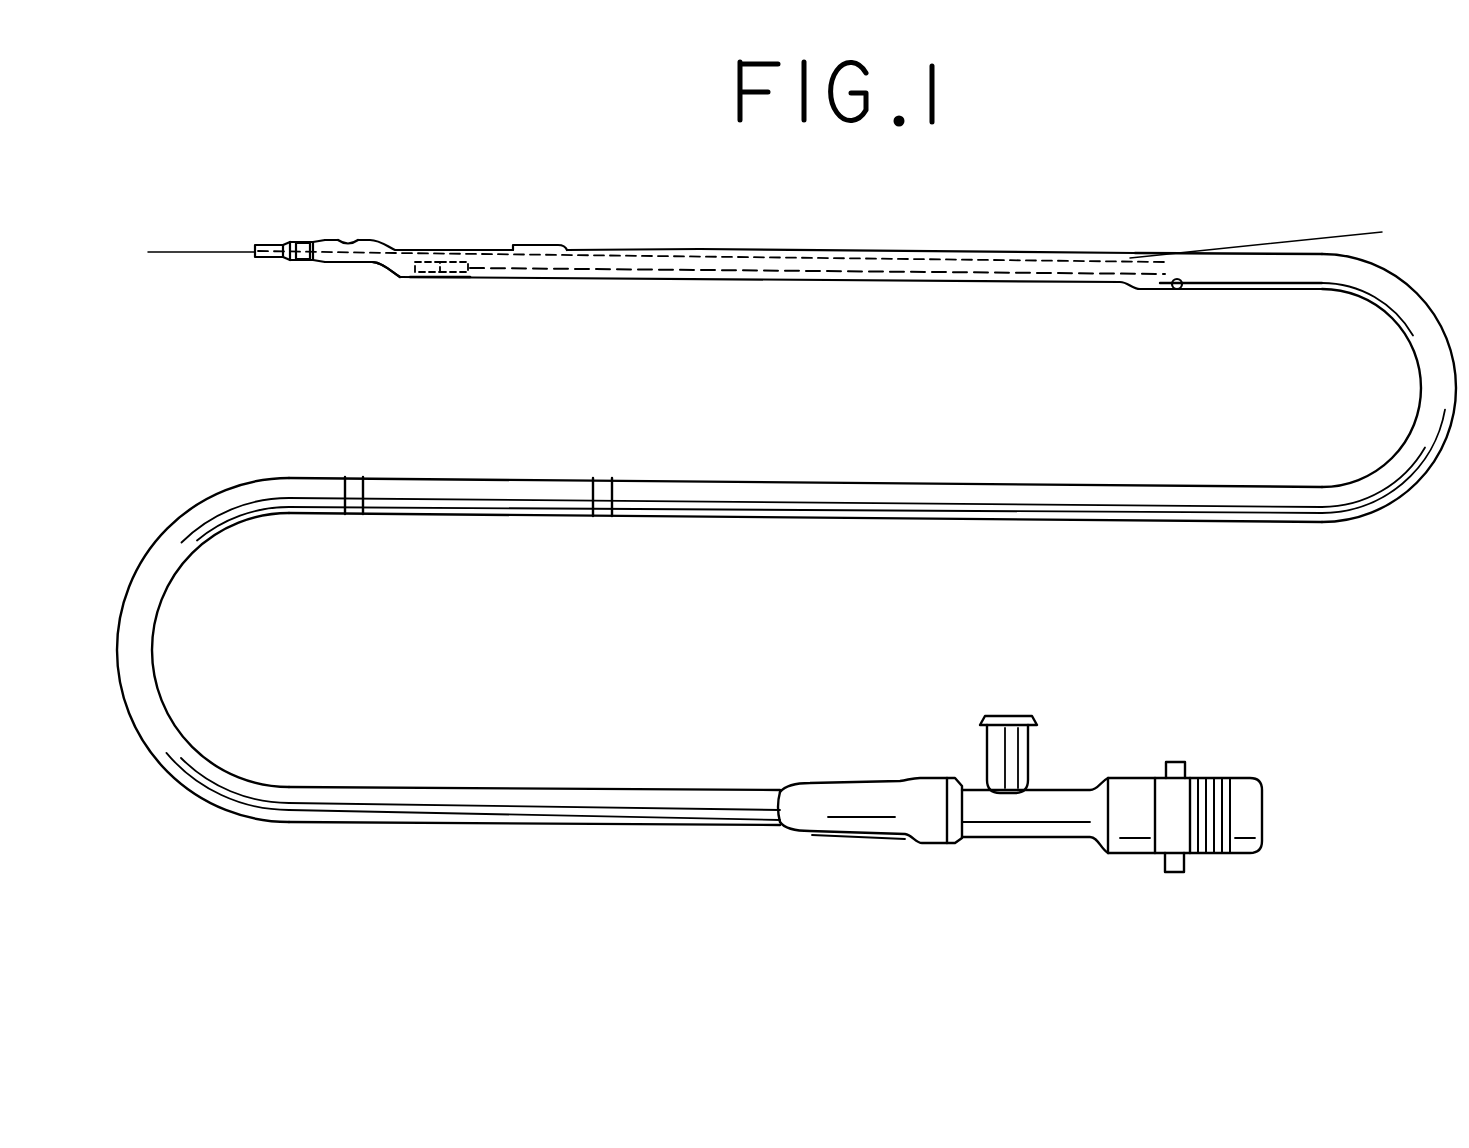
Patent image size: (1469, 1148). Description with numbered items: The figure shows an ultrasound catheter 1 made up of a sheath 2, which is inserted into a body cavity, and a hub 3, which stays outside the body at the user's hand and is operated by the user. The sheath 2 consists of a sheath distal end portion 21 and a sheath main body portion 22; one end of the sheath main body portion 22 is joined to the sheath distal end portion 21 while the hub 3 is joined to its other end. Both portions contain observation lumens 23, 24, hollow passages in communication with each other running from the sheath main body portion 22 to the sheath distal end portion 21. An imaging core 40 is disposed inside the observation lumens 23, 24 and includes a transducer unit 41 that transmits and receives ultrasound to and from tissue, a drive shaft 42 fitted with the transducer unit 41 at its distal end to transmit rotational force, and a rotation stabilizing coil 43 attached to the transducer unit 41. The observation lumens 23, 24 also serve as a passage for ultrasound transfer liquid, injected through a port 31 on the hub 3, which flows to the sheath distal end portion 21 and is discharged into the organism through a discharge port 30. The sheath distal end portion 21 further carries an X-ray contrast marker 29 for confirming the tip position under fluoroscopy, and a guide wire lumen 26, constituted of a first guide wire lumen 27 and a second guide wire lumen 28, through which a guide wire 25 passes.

The ultrasound catheter 1 is at (110, 140).
The sheath 2 is at (1066, 240).
The hub 3 is at (1009, 848).
The sheath distal end portion 21 is at (866, 284).
The sheath main body portion 22 is at (1314, 292).
The observation lumen 23 is at (716, 280).
The observation lumen 24 is at (1178, 290).
The guide wire 25 is at (455, 252).
The guide wire lumen 26 is at (598, 141).
The first guide wire lumen 27 is at (355, 243).
The second guide wire lumen 28 is at (563, 250).
The X-ray contrast marker 29 is at (301, 243).
The discharge port 30 is at (388, 272).
The port 31 is at (1030, 744).
The imaging core 40 is at (560, 356).
The transducer unit 41 is at (463, 276).
The drive shaft 42 is at (530, 275).
The rotation stabilizing coil 43 is at (418, 273).